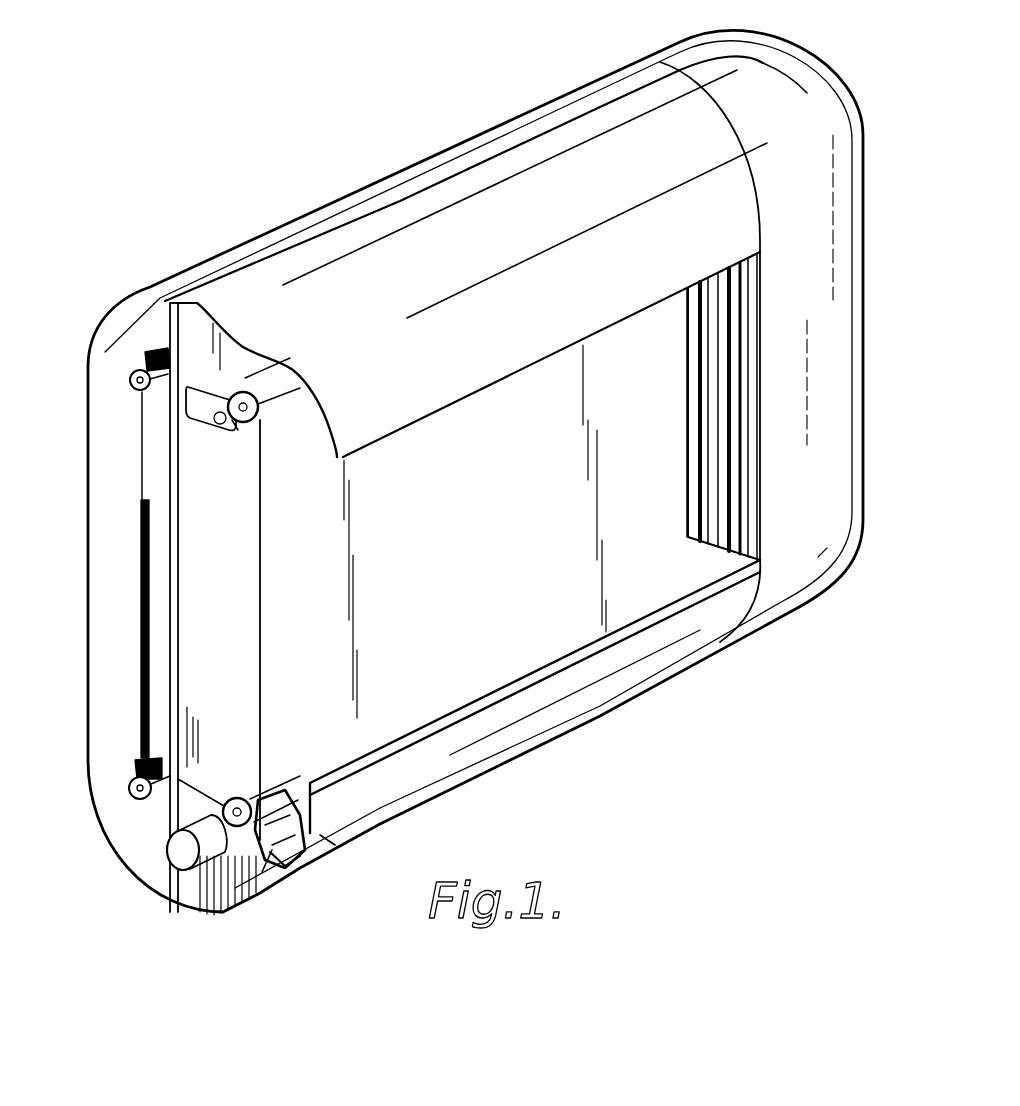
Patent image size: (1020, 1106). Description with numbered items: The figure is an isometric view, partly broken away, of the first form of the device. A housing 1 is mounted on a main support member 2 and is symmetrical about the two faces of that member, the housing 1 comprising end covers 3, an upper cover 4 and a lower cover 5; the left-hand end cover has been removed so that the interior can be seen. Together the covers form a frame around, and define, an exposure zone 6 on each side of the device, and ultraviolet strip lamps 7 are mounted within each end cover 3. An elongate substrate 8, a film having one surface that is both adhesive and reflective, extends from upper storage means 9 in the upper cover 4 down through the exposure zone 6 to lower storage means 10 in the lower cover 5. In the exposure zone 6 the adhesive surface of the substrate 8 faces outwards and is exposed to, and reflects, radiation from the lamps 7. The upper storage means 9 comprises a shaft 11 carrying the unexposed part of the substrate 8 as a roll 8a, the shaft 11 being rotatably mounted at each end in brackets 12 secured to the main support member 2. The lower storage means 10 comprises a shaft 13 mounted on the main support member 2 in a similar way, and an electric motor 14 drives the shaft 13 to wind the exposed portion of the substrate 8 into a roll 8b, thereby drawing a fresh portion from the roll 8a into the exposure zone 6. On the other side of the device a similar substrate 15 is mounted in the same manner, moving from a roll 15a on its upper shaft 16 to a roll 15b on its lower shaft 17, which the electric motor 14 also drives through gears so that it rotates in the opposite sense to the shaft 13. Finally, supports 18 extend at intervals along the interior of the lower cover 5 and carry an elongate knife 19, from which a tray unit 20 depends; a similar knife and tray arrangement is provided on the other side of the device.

The housing 1 is at (524, 772).
The main support member 2 is at (193, 320).
The end cover 3 is at (787, 73).
The upper cover 4 is at (430, 178).
The lower cover 5 is at (630, 677).
The exposure zone 6 is at (663, 593).
The ultraviolet strip lamps 7 is at (738, 443).
The elongate substrate 8 is at (280, 392).
The roll 8a is at (296, 416).
The roll 8b is at (254, 797).
The upper storage means 9 is at (236, 440).
The lower storage means 10 is at (220, 792).
The shaft 11 is at (237, 393).
The brackets 12 is at (206, 421).
The shaft 13 is at (267, 816).
The electric motor 14 is at (182, 853).
The substrate 15 is at (152, 495).
The roll 15a is at (150, 354).
The roll 15b is at (142, 750).
The upper shaft 16 is at (130, 376).
The lower shaft 17 is at (128, 787).
The supports 18 is at (292, 868).
The elongate knife 19 is at (334, 846).
The tray unit 20 is at (265, 885).